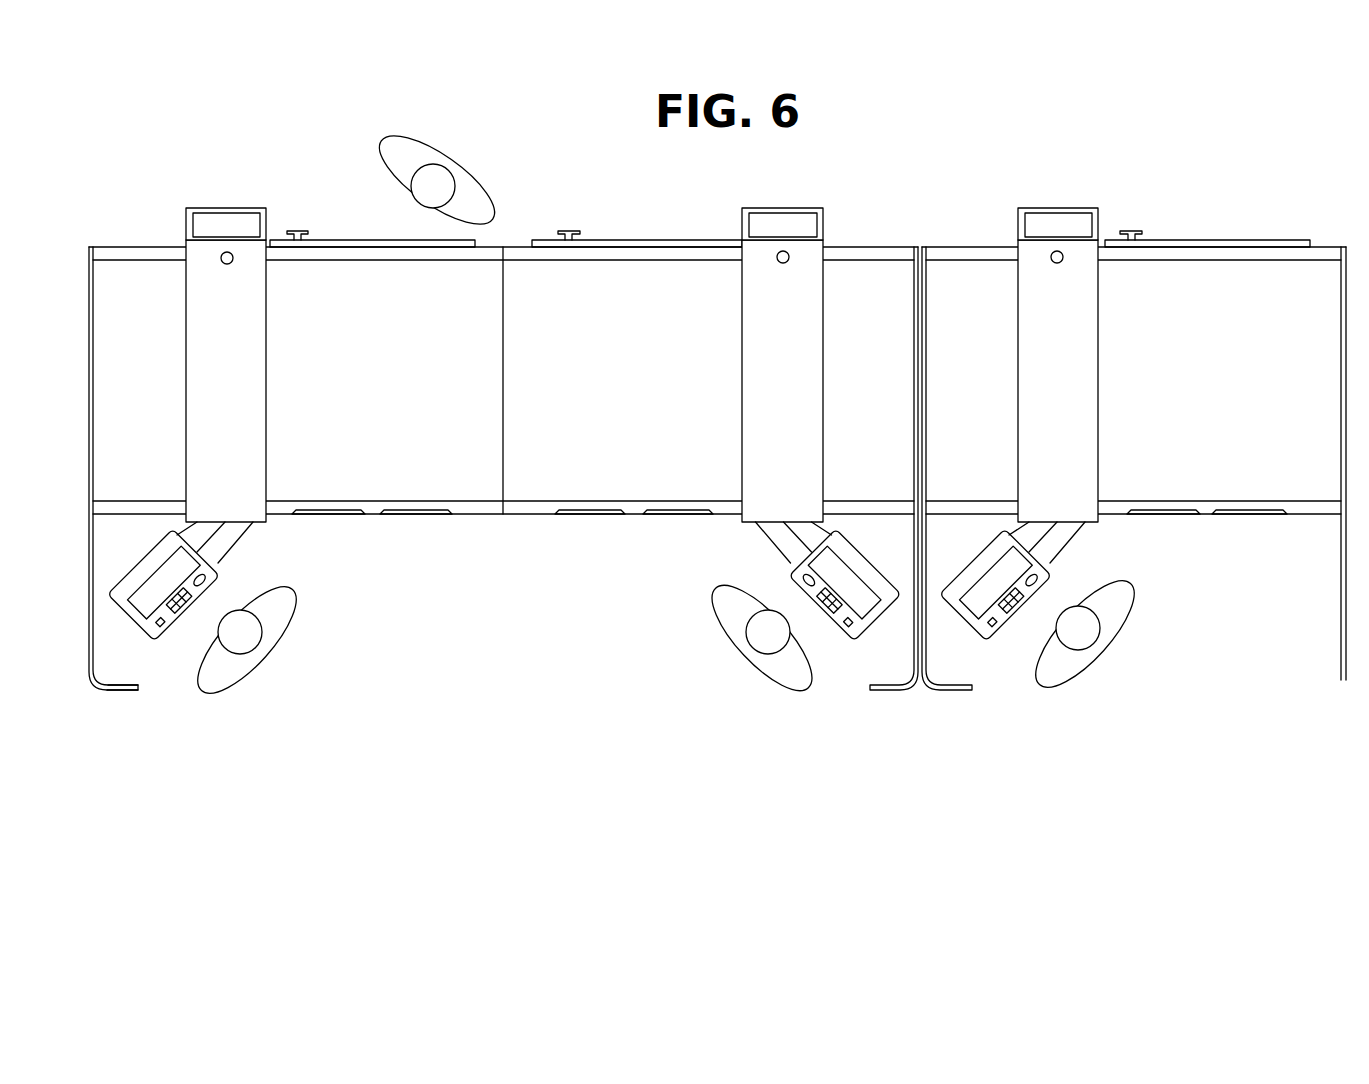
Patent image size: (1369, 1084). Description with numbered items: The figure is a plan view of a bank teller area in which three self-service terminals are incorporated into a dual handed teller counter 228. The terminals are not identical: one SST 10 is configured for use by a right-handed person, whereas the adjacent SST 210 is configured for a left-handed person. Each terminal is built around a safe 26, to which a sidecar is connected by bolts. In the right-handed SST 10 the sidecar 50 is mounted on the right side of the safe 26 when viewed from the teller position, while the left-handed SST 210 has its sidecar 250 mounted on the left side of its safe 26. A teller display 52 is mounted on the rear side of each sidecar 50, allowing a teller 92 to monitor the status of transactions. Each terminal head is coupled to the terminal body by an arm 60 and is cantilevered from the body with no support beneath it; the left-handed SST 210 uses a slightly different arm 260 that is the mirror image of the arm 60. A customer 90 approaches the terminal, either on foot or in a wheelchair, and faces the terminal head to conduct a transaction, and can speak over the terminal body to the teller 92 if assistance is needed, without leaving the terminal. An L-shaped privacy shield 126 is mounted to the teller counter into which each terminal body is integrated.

The ATM 10 is at (362, 675).
The safe 26 is at (345, 238).
The sidecar 50 is at (197, 263).
The teller display 52 is at (217, 208).
The arm 60 is at (237, 540).
The customer 90 is at (237, 677).
The teller 92 is at (423, 142).
The L-shaped privacy shield 126 is at (117, 690).
The left-handed SST 210 is at (585, 613).
The dual handed teller counter 228 is at (400, 460).
The sidecar 250 is at (760, 277).
The arm 260 is at (778, 535).